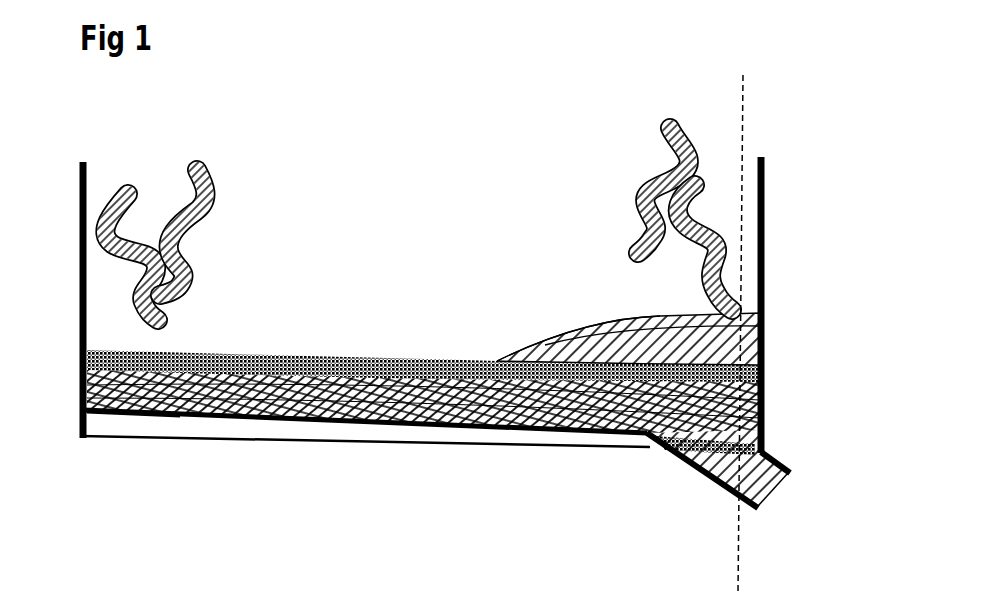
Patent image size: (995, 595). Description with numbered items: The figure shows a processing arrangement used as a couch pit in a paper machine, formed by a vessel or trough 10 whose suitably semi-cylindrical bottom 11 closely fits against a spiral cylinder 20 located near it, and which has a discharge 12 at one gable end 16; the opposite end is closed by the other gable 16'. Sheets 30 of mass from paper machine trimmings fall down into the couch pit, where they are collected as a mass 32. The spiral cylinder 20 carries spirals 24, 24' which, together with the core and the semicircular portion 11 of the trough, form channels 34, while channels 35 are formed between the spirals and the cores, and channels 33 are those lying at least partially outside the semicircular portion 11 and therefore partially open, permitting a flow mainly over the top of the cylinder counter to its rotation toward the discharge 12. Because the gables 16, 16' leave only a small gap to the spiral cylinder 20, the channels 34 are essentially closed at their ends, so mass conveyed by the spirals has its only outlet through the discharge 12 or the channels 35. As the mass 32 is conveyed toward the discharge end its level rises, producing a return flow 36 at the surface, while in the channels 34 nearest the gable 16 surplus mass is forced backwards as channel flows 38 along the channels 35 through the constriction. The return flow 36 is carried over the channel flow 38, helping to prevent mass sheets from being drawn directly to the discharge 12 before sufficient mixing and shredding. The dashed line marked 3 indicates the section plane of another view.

The trough 10 is at (766, 185).
The bottom 11 is at (560, 447).
The discharge 12 is at (780, 465).
The gable 16 is at (664, 325).
The gable 16' is at (47, 300).
The spiral cylinder 20 is at (240, 420).
The spiral 24 is at (423, 445).
The spiral 24' is at (423, 459).
The sheets of mass 30 is at (130, 194).
The mass 32 is at (528, 342).
The channels 33 is at (292, 423).
The channels 34 is at (708, 477).
The channels 35 is at (90, 417).
The return flow 36 is at (603, 323).
The channel flows 38 is at (435, 360).
The section line 3 is at (743, 75).